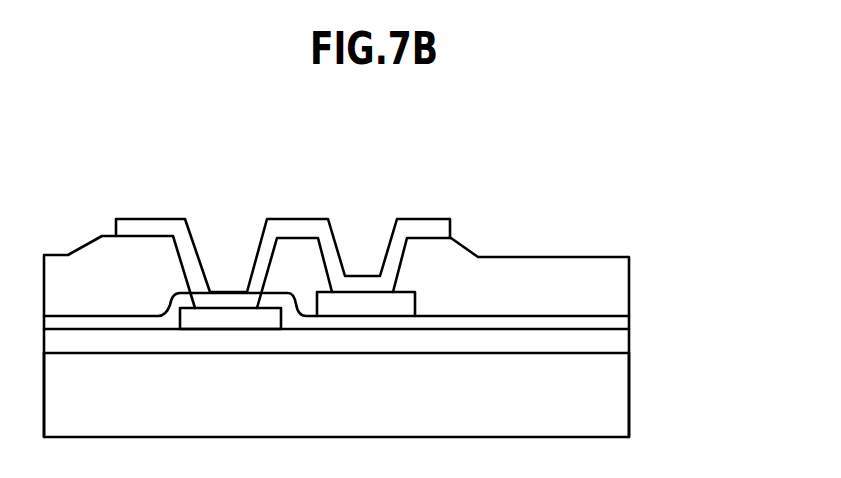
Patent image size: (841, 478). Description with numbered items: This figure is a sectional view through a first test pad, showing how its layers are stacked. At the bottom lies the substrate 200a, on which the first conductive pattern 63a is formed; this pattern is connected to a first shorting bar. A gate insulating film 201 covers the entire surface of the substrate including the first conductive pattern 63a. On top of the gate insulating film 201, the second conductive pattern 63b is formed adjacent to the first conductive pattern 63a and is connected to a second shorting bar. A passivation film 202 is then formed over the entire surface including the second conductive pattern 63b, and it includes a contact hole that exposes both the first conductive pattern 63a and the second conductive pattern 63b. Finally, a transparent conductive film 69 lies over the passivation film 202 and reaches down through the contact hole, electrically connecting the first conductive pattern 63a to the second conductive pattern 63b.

The passivation film 202 is at (613, 276).
The gate insulating film 201 is at (613, 327).
The substrate 200a is at (613, 377).
The transparent conductive film 69 is at (305, 228).
The first conductive pattern 63a is at (230, 312).
The second conductive pattern 63b is at (370, 297).